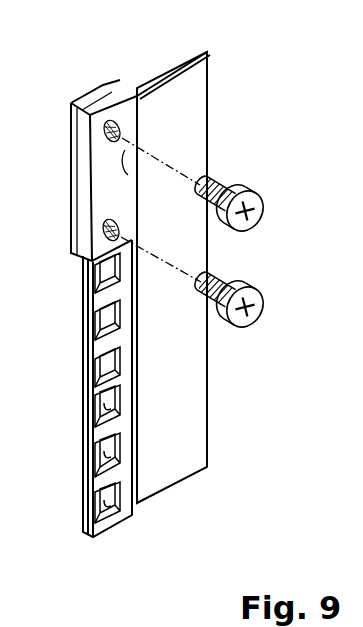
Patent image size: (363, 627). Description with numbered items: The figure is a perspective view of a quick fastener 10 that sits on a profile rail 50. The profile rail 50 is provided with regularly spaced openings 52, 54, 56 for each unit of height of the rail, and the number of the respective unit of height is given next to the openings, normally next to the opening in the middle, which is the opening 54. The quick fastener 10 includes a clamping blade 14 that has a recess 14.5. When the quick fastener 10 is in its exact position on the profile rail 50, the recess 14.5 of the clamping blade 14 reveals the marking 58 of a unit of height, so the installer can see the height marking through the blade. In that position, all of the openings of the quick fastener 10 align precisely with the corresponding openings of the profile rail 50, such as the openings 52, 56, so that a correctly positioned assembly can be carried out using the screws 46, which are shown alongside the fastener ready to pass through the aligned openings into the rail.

The quick fastener 10 is at (75, 73).
The clamping blade 14 is at (107, 187).
The recess 14.5 is at (130, 160).
The screws 46 is at (261, 201).
The profile rail 50 is at (183, 440).
The opening 52 is at (97, 511).
The opening 54 is at (97, 461).
The opening 56 is at (97, 411).
The marking 58 is at (128, 158).